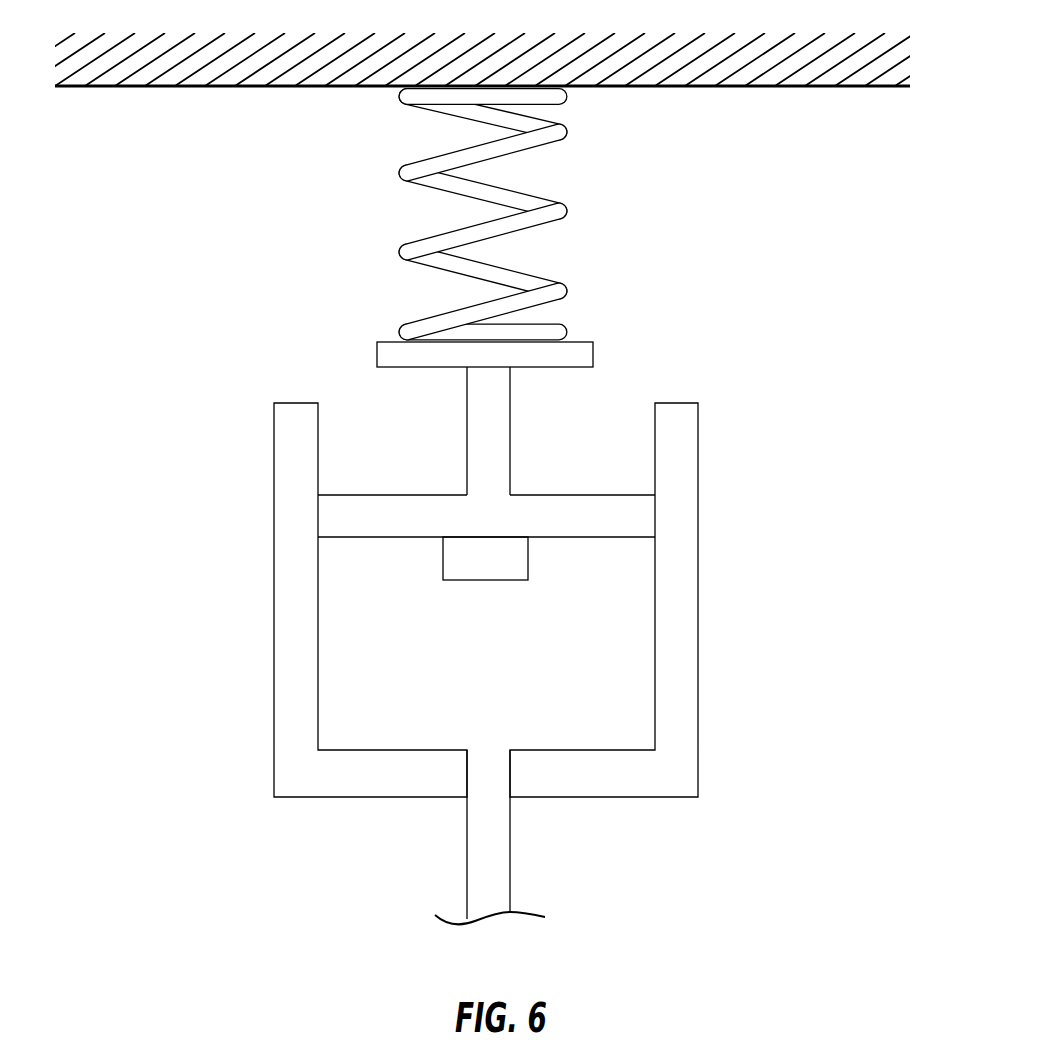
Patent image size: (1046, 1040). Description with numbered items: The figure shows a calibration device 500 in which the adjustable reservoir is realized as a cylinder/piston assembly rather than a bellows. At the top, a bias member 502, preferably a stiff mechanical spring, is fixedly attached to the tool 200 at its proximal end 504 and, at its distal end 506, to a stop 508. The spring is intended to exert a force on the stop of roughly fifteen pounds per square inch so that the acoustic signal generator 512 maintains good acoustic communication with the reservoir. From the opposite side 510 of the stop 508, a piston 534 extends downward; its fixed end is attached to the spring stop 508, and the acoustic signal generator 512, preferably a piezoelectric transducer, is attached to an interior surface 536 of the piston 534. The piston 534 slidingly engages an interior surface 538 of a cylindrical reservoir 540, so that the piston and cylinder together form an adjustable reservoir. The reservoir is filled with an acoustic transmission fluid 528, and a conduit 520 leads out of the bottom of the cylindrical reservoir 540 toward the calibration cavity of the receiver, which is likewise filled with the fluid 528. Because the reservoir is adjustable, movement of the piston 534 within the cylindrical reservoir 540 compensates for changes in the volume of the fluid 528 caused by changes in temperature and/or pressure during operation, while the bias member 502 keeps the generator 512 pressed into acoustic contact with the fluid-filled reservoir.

The tool 200 is at (502, 88).
The calibration device 500 is at (198, 563).
The bias member 502 is at (383, 214).
The proximal end 504 is at (541, 125).
The distal end 506 is at (529, 305).
The stop 508 is at (452, 332).
The opposite side 510 is at (540, 431).
The acoustic signal generator 512 is at (510, 573).
The conduit 520 is at (538, 837).
The acoustic transmission fluid 528 is at (511, 680).
The piston 534 is at (486, 466).
The interior surface of the piston 536 is at (486, 568).
The interior surface of the cylindrical reservoir 538 is at (601, 643).
The cylindrical reservoir 540 is at (538, 600).